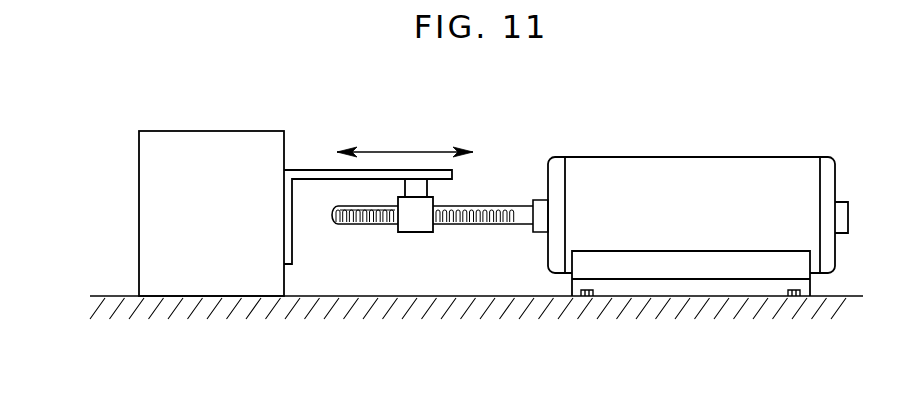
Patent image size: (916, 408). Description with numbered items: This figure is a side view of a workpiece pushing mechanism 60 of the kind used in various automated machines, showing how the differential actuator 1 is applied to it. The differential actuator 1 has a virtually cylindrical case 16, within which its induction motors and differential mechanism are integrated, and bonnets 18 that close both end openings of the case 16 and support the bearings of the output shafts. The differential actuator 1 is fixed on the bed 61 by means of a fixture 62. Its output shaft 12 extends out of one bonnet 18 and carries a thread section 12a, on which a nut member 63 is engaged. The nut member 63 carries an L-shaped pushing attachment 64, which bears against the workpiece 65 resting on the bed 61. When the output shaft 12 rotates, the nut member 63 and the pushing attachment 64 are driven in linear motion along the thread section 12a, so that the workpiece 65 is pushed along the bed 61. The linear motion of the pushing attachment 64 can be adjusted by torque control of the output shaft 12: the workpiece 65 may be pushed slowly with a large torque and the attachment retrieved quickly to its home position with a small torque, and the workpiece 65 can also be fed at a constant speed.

The differential actuator 1 is at (710, 157).
The output shaft 12 is at (488, 207).
The thread section 12a is at (358, 226).
The case 16 is at (785, 170).
The bonnet 18 is at (558, 163).
The workpiece pushing mechanism 60 is at (410, 146).
The bed 61 is at (448, 297).
The fixture 62 is at (812, 288).
The nut member 63 is at (413, 232).
The L-shaped pushing attachment 64 is at (310, 182).
The workpiece 65 is at (222, 135).